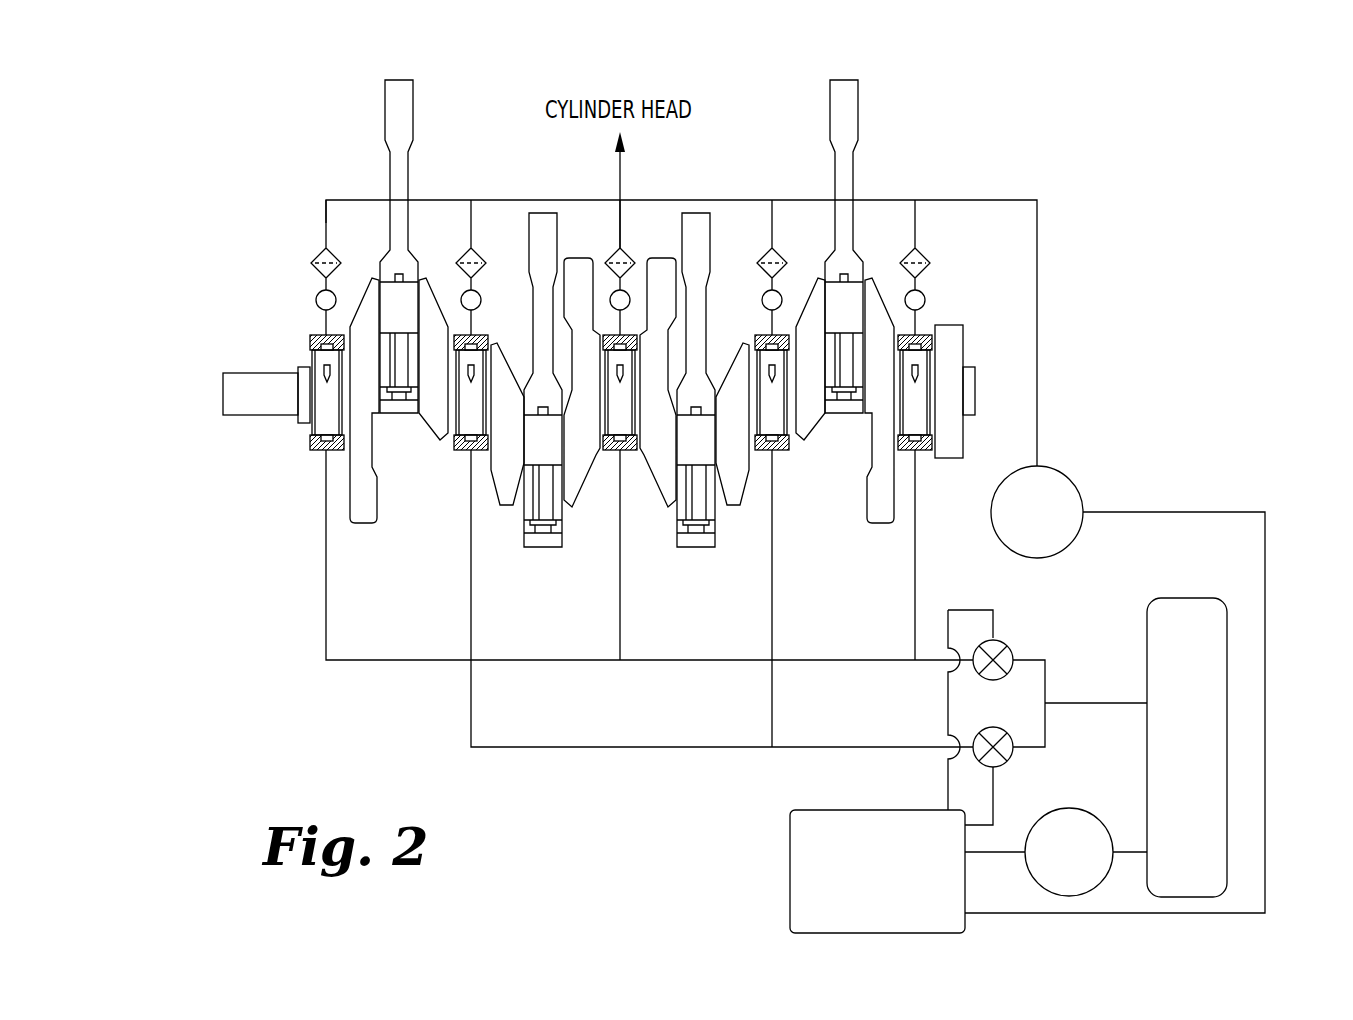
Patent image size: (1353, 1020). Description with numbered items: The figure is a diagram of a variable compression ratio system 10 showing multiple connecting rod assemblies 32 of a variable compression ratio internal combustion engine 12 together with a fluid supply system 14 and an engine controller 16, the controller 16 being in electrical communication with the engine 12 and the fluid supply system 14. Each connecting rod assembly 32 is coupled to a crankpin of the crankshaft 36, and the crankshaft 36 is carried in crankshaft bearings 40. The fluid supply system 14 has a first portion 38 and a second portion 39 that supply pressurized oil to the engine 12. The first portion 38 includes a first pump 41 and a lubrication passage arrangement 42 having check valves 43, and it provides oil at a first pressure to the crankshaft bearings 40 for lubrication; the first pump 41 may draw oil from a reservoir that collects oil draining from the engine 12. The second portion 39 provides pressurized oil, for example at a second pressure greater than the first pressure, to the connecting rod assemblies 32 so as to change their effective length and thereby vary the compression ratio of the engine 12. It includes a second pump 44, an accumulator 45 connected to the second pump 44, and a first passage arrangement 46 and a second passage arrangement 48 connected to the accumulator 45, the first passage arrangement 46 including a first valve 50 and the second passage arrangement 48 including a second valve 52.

The variable compression ratio system 10 is at (270, 150).
The variable compression ratio internal combustion engine 12 is at (238, 363).
The fluid supply system 14 is at (1236, 884).
The engine controller 16 is at (790, 873).
The connecting rod assembly 32 is at (423, 125).
The crankshaft 36 is at (257, 415).
The first portion 38 is at (1078, 262).
The second portion 39 is at (307, 661).
The crankshaft bearing 40 is at (484, 337).
The first pump 41 is at (1078, 487).
The lubrication passage arrangement 42 is at (325, 223).
The check valve 43 is at (317, 300).
The second pump 44 is at (1095, 818).
The accumulator 45 is at (1226, 683).
The first passage arrangement 46 is at (407, 662).
The second passage arrangement 48 is at (577, 748).
The first valve 50 is at (1015, 652).
The second valve 52 is at (1012, 755).